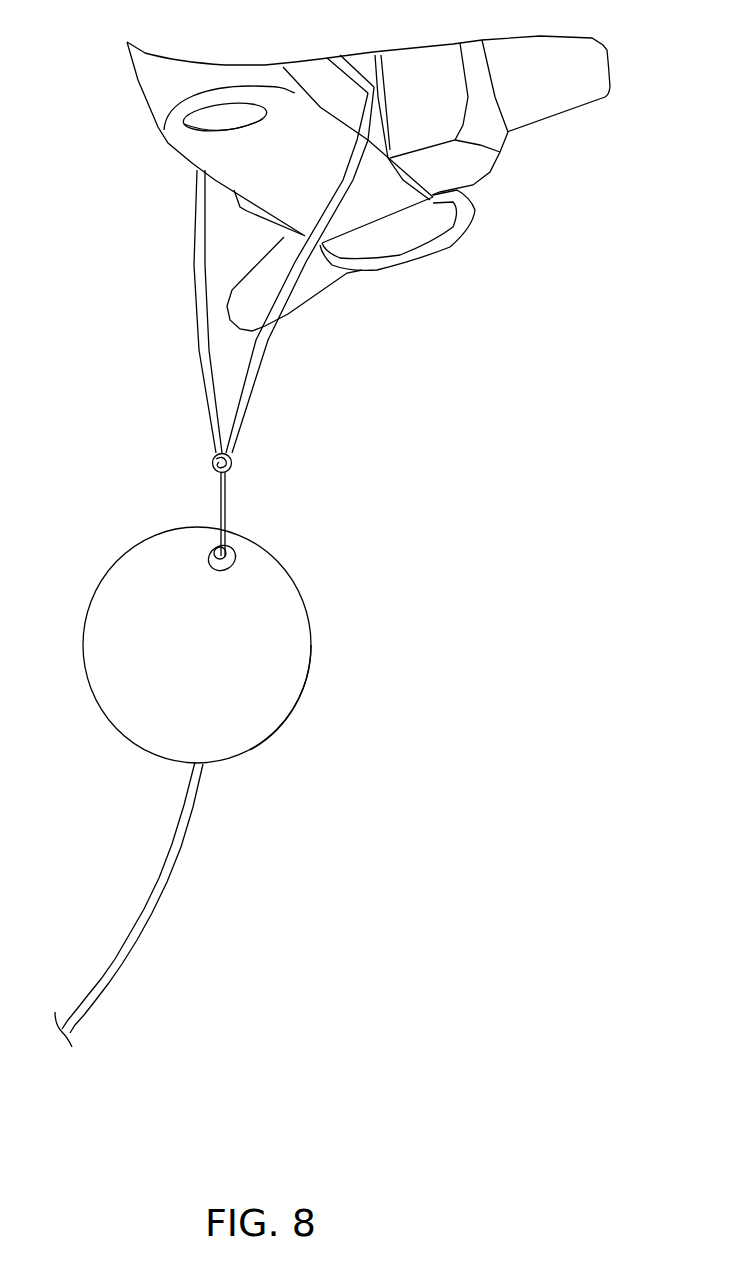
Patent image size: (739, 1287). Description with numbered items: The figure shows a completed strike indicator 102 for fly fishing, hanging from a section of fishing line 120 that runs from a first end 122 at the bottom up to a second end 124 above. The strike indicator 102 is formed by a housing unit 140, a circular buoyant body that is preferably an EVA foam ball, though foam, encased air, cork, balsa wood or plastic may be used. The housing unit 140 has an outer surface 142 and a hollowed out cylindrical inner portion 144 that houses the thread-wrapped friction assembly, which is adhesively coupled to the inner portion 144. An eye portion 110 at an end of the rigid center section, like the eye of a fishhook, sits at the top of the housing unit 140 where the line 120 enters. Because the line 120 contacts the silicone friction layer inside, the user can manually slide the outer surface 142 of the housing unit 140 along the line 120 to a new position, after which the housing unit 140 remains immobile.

The strike indicator 102 is at (84, 763).
The eye portion 110 is at (261, 542).
The section of fishing line 120 is at (172, 946).
The first end 122 is at (68, 1066).
The second end 124 is at (251, 481).
The housing unit 140 is at (301, 652).
The outer surface 142 is at (300, 733).
The hollowed out cylindrical inner portion 144 is at (264, 574).